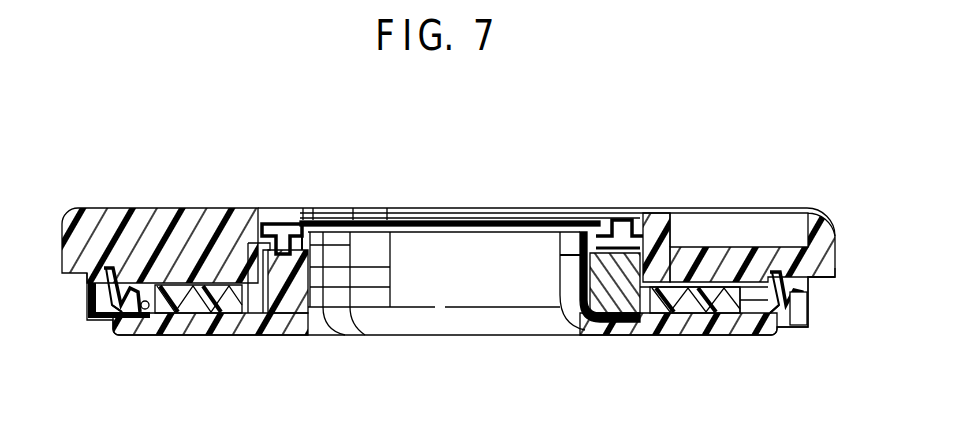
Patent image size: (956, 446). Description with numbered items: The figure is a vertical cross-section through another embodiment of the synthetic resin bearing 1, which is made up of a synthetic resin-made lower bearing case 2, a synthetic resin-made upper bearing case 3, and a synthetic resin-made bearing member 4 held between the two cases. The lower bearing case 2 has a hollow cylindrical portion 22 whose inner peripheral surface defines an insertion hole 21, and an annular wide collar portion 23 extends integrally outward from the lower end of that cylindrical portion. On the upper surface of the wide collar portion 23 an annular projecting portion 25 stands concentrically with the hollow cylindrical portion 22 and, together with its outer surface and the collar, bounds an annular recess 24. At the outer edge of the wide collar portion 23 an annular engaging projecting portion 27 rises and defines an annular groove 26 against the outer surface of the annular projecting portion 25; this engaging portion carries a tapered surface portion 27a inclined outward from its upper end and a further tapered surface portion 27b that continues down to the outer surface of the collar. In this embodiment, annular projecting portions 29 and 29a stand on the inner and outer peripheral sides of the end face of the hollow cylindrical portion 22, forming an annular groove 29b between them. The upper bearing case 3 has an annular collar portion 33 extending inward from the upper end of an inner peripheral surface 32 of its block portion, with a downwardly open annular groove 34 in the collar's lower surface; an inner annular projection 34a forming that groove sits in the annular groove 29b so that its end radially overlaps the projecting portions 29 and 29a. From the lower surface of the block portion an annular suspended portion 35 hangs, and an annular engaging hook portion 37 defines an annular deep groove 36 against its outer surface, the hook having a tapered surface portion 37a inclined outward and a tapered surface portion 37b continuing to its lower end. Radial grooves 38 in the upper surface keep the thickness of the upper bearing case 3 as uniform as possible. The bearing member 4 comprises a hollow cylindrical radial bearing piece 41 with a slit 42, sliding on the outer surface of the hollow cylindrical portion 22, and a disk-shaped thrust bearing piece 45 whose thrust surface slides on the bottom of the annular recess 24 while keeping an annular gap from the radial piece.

The synthetic resin bearing 1 is at (203, 205).
The lower bearing case 2 is at (257, 335).
The upper bearing case 3 is at (712, 208).
The bearing member 4 is at (680, 312).
The insertion hole 21 is at (350, 300).
The hollow cylindrical portion 22 is at (350, 268).
The wide collar portion 23 is at (200, 335).
The annular recess 24 is at (147, 337).
The annular projecting portion 25 is at (163, 210).
The annular groove 26 is at (130, 333).
The annular engaging projecting portion 27 is at (125, 207).
The tapered surface portion 27a is at (107, 268).
The tapered surface portion 27b is at (100, 303).
The annular projecting portion 29 is at (270, 222).
The annular projecting portion 29a is at (300, 242).
The annular groove 29b is at (345, 250).
The inner peripheral surface 32 is at (640, 217).
The annular collar portion 33 is at (628, 213).
The annular groove 34 is at (617, 213).
The inner annular projection 34a is at (580, 250).
The annular suspended portion 35 is at (760, 337).
The annular deep groove 36 is at (785, 247).
The annular engaging hook portion 37 is at (806, 312).
The tapered surface portion 37a is at (807, 287).
The tapered surface portion 37b is at (797, 322).
The grooves 38 is at (753, 232).
The hollow cylindrical radial bearing piece 41 is at (630, 322).
The slit 42 is at (262, 305).
The disk-shaped thrust bearing piece 45 is at (707, 337).